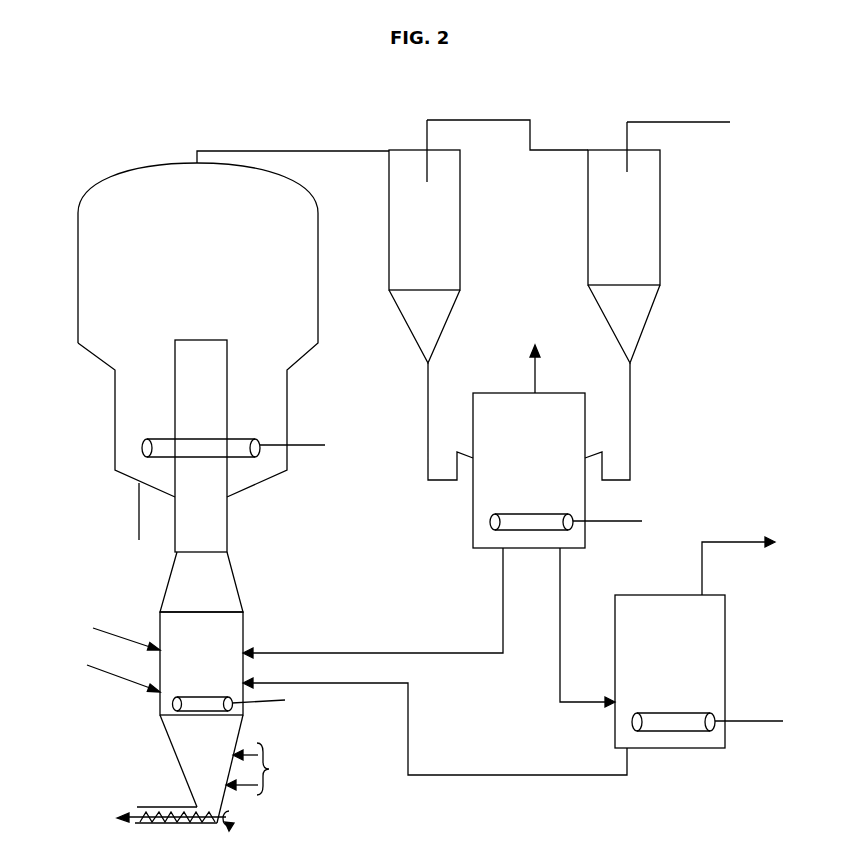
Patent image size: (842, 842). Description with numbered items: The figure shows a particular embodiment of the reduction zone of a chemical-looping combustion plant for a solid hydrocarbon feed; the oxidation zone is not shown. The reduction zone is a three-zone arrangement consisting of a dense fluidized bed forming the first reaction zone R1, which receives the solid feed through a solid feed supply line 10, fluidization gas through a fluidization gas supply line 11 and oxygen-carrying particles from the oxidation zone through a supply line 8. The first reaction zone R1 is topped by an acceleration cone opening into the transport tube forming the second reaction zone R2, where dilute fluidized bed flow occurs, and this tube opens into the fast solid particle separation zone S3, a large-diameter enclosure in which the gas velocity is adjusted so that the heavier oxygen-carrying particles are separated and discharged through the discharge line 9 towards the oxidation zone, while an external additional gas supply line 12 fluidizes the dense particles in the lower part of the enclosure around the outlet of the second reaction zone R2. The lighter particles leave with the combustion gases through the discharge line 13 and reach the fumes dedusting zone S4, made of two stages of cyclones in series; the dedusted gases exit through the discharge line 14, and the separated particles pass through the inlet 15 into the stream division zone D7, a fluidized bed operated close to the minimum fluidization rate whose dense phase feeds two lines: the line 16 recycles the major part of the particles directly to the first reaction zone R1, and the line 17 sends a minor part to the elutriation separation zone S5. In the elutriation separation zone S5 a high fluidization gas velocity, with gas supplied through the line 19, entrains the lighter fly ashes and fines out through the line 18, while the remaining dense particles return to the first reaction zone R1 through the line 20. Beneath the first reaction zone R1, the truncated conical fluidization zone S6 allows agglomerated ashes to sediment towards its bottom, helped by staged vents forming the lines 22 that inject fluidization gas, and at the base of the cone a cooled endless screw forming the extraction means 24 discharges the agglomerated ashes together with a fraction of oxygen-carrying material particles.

The fast solid particle separation zone S3 is at (100, 272).
The external additional gas supply line 12 is at (305, 444).
The discharge line 9 is at (139, 528).
The second reaction zone R2 is at (213, 525).
The first reaction zone R1 is at (215, 585).
The fluidization zone S6 is at (181, 752).
The fluidization gas supply line 11 is at (246, 701).
The solid feed supply line 10 is at (95, 630).
The supply line for the oxygen-carrying particles 8 is at (130, 688).
The lines allowing a fluidization gas to be fed 22 is at (269, 769).
The means for extraction of a particle stream 24 is at (150, 828).
The discharge line 13 is at (310, 151).
The fumes dedusting zone S4 is at (588, 226).
The discharge line 14 is at (710, 122).
The inlet 15 is at (627, 410).
The stream division zone D7 is at (500, 487).
The line 16 is at (363, 655).
The line 17 is at (562, 583).
The elutriation separation zone S5 is at (697, 680).
The line 18 is at (738, 545).
The line 19 is at (740, 720).
The line 20 is at (455, 775).